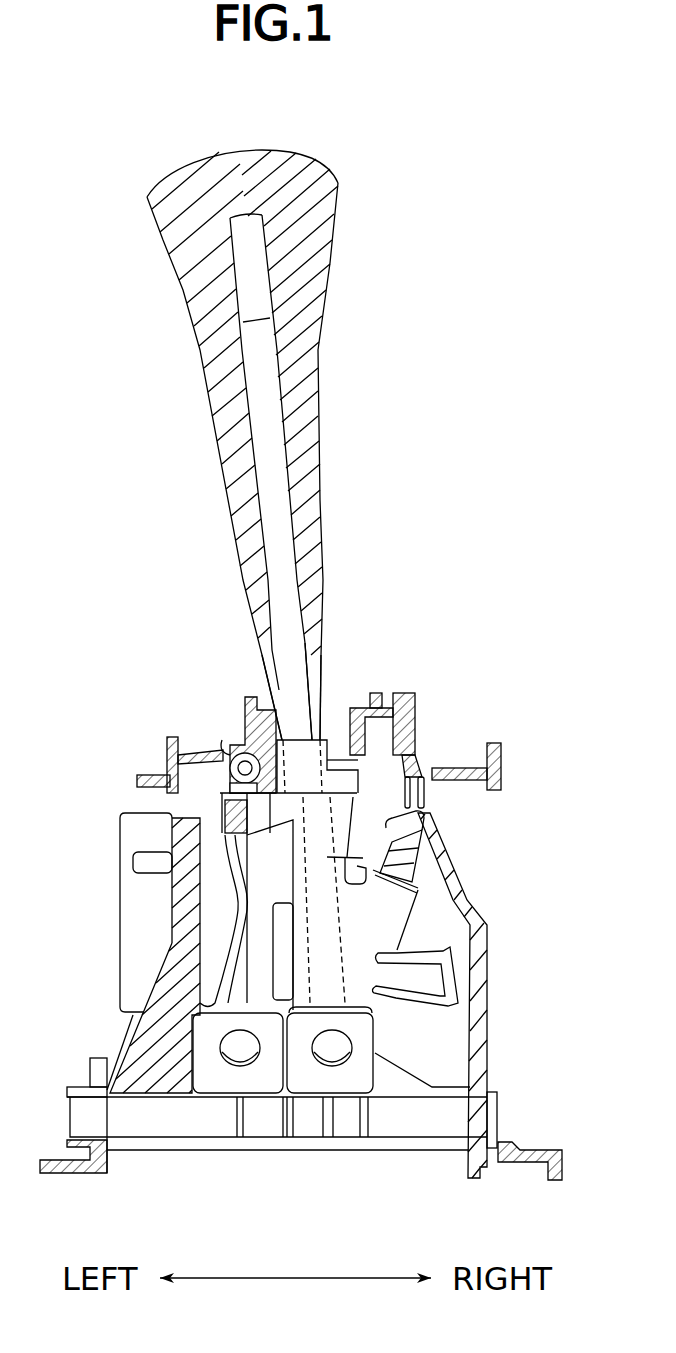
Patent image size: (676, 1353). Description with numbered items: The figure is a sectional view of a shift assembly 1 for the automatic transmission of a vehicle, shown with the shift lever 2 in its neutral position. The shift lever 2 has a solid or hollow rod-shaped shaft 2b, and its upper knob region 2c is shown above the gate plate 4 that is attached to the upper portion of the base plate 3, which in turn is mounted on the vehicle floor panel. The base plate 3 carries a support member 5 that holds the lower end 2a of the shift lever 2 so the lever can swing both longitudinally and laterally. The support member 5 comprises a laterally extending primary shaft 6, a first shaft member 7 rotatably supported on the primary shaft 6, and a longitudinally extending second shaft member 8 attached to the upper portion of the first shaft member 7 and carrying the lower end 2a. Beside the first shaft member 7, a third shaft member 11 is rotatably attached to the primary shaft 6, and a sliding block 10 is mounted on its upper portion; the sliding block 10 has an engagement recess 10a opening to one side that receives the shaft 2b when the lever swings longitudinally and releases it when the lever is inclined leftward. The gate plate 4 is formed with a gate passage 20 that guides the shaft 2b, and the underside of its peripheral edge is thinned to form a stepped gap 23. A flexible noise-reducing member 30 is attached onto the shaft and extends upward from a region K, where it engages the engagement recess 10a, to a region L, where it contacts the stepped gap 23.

The shift assembly 1 is at (442, 540).
The shift lever 2 is at (330, 365).
The lower end of the shift lever 2a is at (343, 965).
The shaft 2b is at (275, 471).
The knob 2c is at (339, 197).
The base plate 3 is at (485, 1032).
The gate plate 4 is at (158, 780).
The support member 5 is at (407, 1042).
The primary shaft 6 is at (420, 1127).
The first shaft member 7 is at (417, 1072).
The second shaft member 8 is at (307, 1083).
The sliding block 10 is at (357, 797).
The engagement recess 10a is at (360, 768).
The third shaft member 11 is at (212, 1083).
The gate passage 20 is at (329, 692).
The stepped gap 23 is at (243, 742).
The noise-reducing member 30 is at (306, 730).
The region K is at (350, 856).
The region L is at (340, 767).